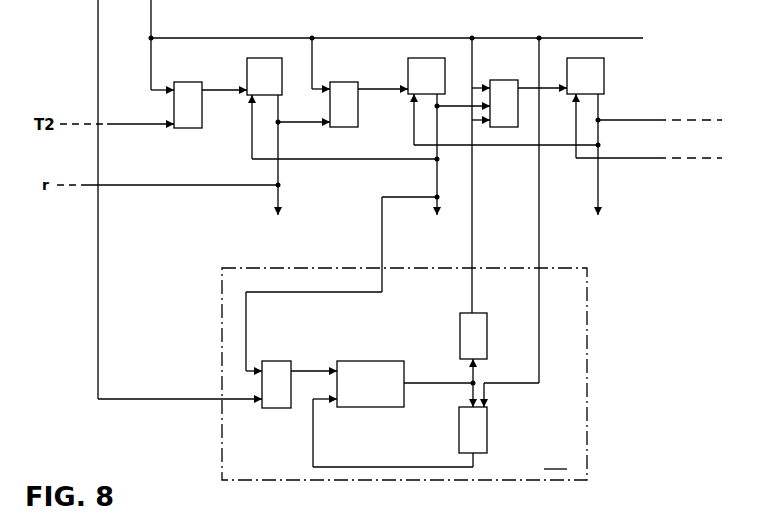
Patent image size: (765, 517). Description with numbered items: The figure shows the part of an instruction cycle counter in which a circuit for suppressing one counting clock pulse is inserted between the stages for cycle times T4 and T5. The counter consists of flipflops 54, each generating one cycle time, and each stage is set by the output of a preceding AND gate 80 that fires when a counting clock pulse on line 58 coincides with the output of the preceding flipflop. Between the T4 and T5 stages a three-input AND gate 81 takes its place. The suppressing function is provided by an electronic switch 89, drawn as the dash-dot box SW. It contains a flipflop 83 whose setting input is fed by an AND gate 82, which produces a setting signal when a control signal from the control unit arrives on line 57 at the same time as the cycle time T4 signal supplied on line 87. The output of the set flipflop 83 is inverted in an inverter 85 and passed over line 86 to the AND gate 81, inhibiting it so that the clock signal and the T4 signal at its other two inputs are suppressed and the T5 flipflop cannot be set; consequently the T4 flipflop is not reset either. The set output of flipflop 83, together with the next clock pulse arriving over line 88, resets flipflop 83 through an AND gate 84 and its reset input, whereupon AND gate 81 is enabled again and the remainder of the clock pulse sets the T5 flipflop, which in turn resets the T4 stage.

The flipflop 54 is at (247, 70).
The line 57 is at (168, 199).
The line 58 is at (163, 45).
The AND gate 80 is at (183, 82).
The AND gate 81 is at (501, 80).
The AND gate 82 is at (285, 361).
The flipflop 83 is at (383, 361).
The AND gate 84 is at (487, 426).
The inverter 85 is at (482, 313).
The line 86 is at (472, 257).
The line 87 is at (382, 236).
The line 88 is at (539, 257).
The electronic switch 89 is at (587, 323).